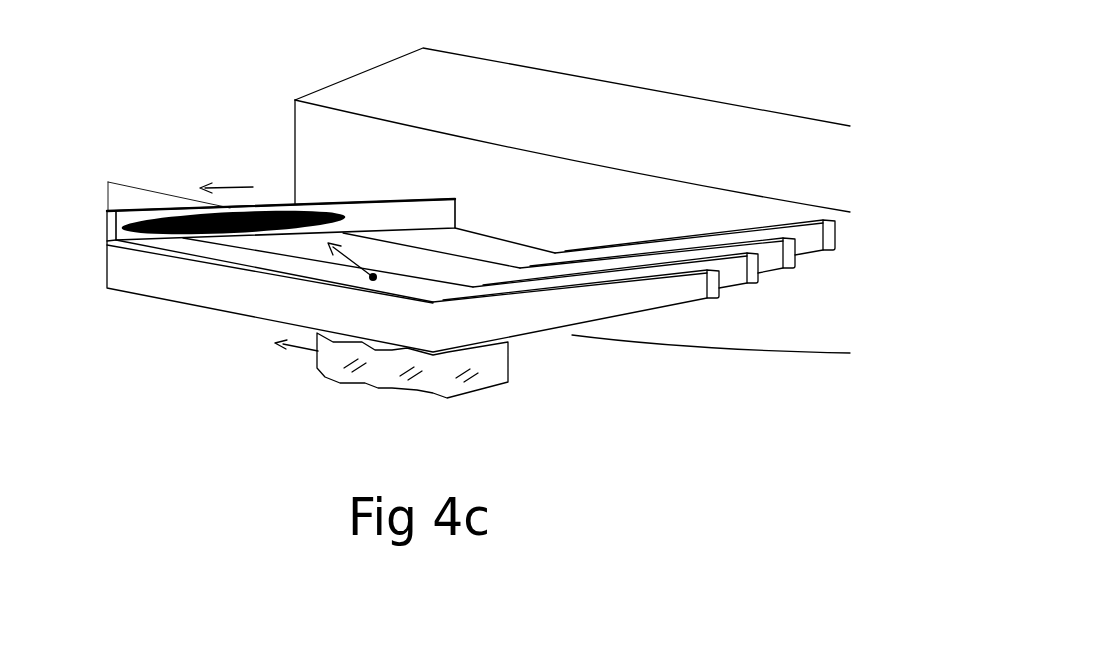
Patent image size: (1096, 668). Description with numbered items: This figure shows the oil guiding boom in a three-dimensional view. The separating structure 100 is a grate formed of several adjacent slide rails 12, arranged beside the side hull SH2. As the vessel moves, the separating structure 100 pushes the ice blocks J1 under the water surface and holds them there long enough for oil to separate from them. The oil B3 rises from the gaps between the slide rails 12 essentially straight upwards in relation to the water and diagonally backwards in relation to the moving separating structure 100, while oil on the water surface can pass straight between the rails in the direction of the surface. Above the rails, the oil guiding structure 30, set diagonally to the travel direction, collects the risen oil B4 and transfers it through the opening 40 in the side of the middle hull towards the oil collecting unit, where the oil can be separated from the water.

The side hull SH2 is at (542, 72).
The separating structure 100 is at (686, 358).
The oil guiding structure 30 is at (455, 199).
The opening 40 is at (107, 183).
The risen oil B4 is at (255, 209).
The oil B3 is at (373, 273).
The slide rails 12 is at (790, 268).
The ice blocks J1 is at (432, 392).